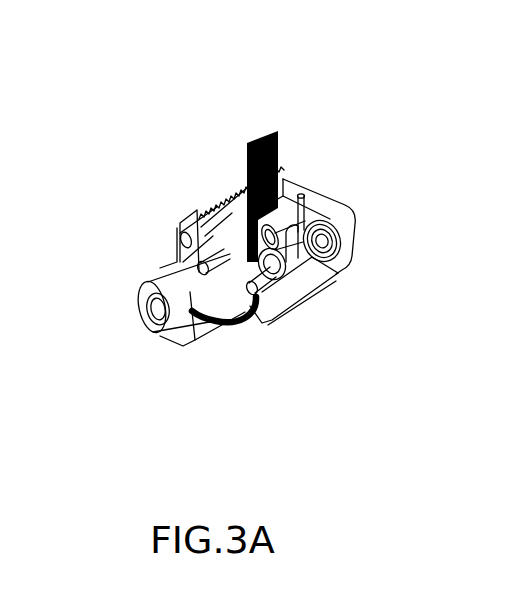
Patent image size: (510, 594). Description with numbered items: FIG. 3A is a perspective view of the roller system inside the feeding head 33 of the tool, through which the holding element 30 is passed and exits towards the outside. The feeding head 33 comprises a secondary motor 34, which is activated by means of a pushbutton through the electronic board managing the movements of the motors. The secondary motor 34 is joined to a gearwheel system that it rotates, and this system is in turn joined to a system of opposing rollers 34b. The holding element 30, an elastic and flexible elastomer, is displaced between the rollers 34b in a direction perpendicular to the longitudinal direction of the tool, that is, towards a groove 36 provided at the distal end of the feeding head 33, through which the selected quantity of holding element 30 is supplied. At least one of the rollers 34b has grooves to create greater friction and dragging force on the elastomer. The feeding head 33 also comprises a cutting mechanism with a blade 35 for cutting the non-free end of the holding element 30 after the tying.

The feeding head 33 is at (183, 143).
The holding element 30 is at (272, 153).
The groove 36 is at (286, 197).
The blade 35 is at (212, 220).
The secondary motor 34 is at (197, 307).
The opposing rollers 34b is at (145, 296).